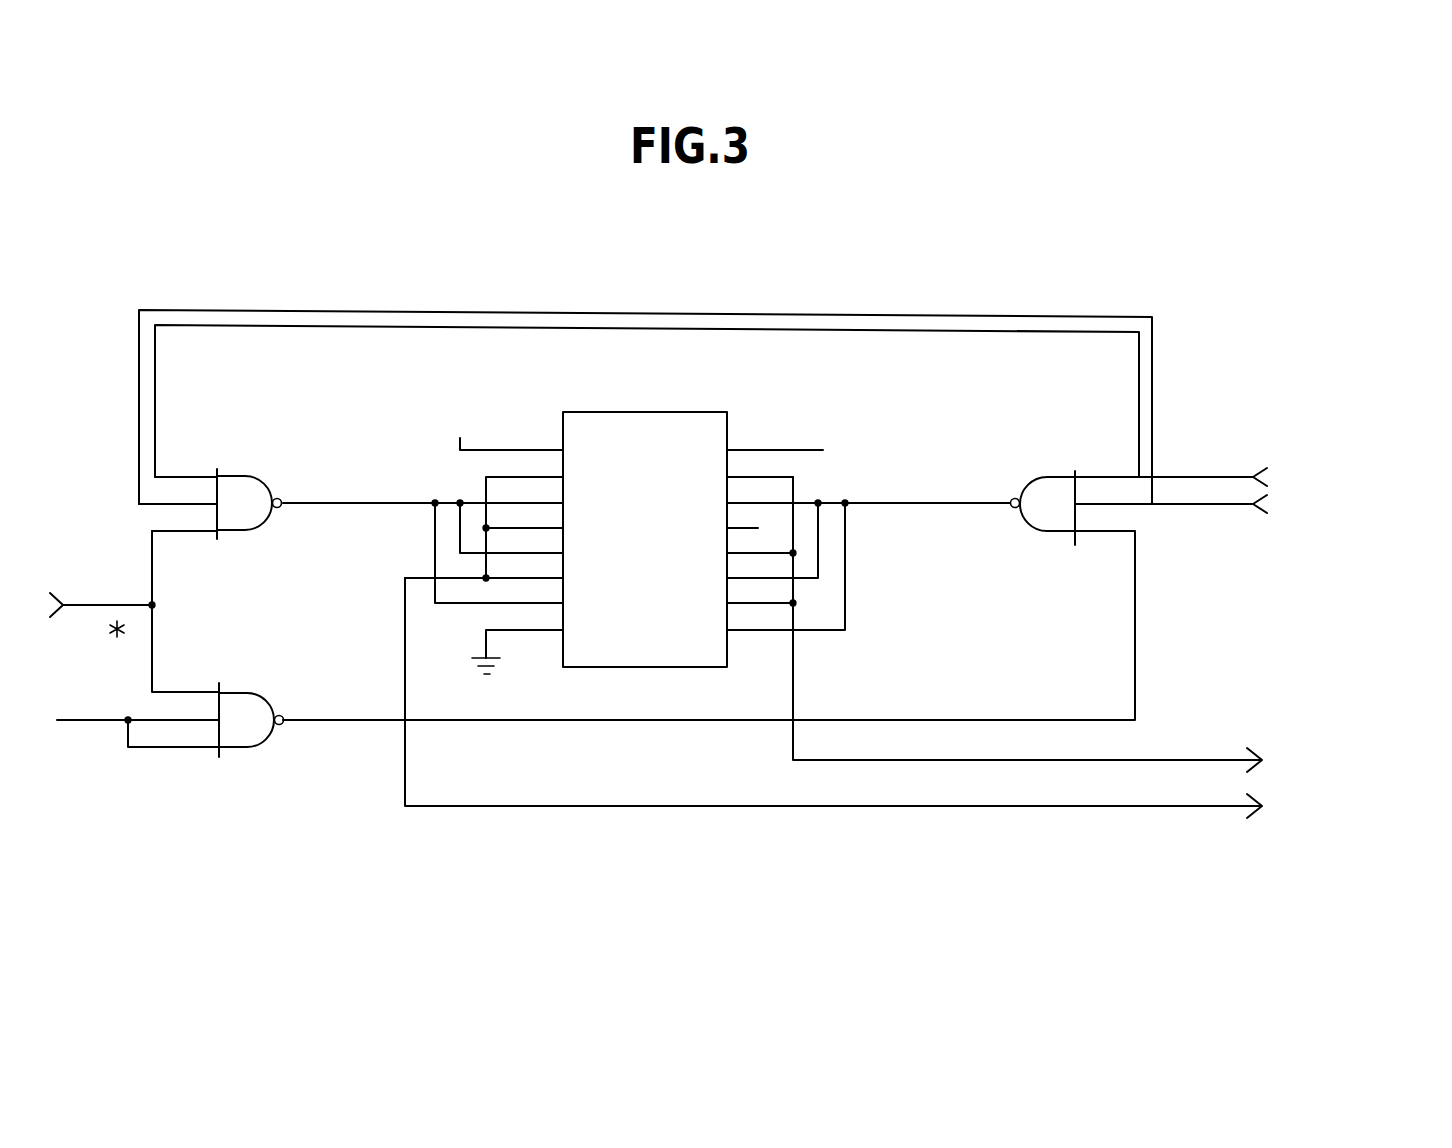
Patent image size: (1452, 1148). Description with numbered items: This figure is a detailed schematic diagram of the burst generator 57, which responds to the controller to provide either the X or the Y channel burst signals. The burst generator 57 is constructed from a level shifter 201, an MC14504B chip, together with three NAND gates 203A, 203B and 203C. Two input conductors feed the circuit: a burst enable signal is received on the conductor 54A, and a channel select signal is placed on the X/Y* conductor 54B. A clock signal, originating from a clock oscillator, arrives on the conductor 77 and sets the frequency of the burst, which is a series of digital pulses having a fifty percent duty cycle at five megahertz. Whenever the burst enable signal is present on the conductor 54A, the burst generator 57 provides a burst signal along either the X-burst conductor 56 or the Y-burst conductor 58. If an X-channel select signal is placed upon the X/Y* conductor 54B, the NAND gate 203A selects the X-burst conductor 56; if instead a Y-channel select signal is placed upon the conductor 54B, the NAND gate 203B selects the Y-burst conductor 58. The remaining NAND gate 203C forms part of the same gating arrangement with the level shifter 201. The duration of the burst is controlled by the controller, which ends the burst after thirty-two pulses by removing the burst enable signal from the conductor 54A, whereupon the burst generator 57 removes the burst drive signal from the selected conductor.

The burst generator 57 is at (574, 296).
The level shifter 201 is at (600, 412).
The NAND gate 203A is at (235, 531).
The NAND gate 203B is at (1027, 531).
The NAND gate 203C is at (240, 747).
The conductor 54A is at (1180, 502).
The X/Y* conductor 54B is at (108, 603).
The conductor 77 is at (1193, 482).
The Y-burst conductor 58 is at (1192, 760).
The X-burst conductor 56 is at (1145, 806).